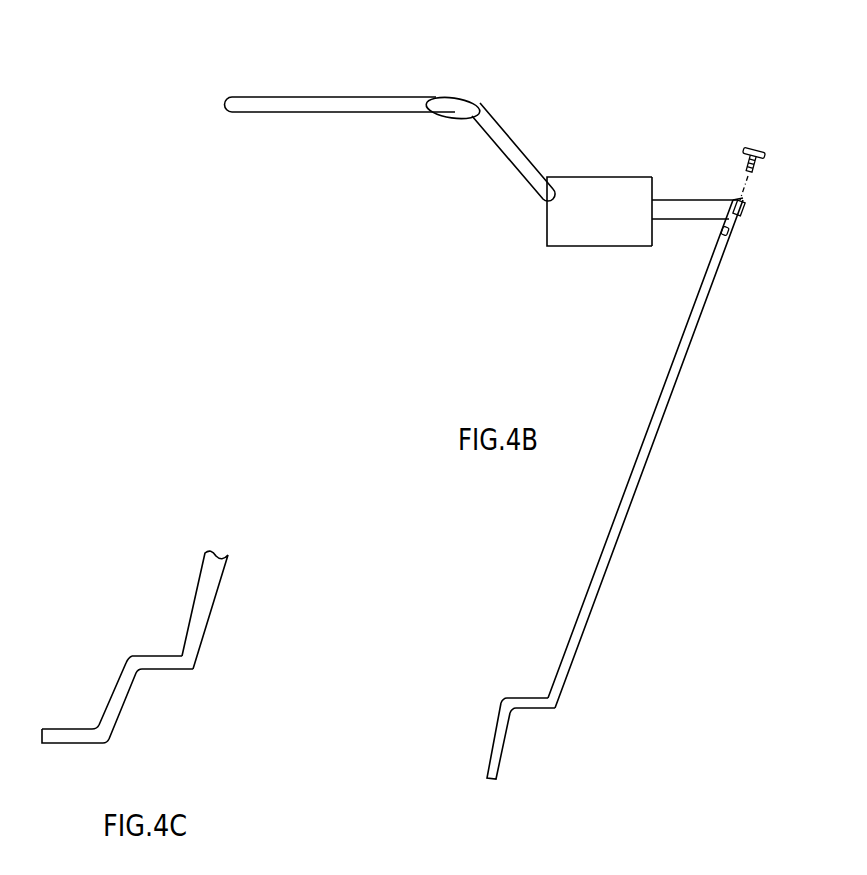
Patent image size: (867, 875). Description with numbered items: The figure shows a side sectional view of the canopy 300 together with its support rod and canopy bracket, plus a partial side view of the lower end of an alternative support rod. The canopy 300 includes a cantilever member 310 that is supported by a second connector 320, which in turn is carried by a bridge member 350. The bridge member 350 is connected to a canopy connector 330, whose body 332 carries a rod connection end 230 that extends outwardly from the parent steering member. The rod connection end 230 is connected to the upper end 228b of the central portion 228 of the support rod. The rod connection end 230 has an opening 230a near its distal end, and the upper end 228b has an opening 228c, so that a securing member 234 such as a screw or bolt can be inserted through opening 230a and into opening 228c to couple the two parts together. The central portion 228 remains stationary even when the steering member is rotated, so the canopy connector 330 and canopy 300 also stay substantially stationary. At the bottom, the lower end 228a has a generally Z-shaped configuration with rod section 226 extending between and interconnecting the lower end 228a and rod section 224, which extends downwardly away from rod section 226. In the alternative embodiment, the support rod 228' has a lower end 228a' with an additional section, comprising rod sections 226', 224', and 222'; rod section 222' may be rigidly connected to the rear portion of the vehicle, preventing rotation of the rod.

In FIG. 4B, the canopy 300 is at (243, 84).
In FIG. 4B, the cantilever member 310 is at (318, 96).
In FIG. 4B, the second connector 320 is at (467, 98).
In FIG. 4B, the bridge member 350 is at (520, 147).
In FIG. 4B, the canopy connector 330 is at (592, 163).
In FIG. 4B, the housing body 332 is at (655, 190).
In FIG. 4B, the securing member 234 is at (768, 157).
In FIG. 4B, the opening 230a is at (742, 205).
In FIG. 4B, the opening 228c is at (735, 234).
In FIG. 4B, the upper end 228b is at (729, 268).
In FIG. 4B, the rod connection end 230 is at (683, 212).
In FIG. 4B, the central portion 228 is at (672, 453).
In FIG. 4B, the rod section 226 is at (517, 677).
In FIG. 4B, the rod section 224 is at (474, 734).
In FIG. 4B, the lower end 228a is at (547, 710).
In FIG. 4C, the support rod 228' is at (236, 601).
In FIG. 4C, the rod section 226' is at (155, 635).
In FIG. 4C, the rod section 224' is at (108, 695).
In FIG. 4C, the rod section 222' is at (87, 755).
In FIG. 4C, the lower end 228a' is at (196, 660).